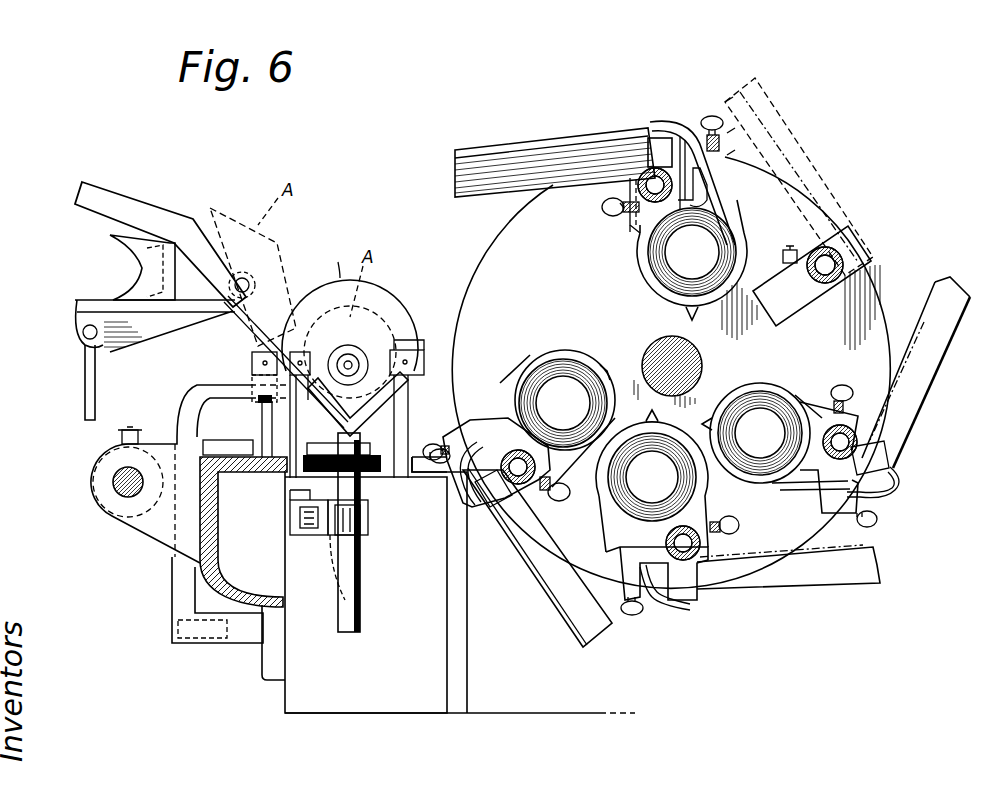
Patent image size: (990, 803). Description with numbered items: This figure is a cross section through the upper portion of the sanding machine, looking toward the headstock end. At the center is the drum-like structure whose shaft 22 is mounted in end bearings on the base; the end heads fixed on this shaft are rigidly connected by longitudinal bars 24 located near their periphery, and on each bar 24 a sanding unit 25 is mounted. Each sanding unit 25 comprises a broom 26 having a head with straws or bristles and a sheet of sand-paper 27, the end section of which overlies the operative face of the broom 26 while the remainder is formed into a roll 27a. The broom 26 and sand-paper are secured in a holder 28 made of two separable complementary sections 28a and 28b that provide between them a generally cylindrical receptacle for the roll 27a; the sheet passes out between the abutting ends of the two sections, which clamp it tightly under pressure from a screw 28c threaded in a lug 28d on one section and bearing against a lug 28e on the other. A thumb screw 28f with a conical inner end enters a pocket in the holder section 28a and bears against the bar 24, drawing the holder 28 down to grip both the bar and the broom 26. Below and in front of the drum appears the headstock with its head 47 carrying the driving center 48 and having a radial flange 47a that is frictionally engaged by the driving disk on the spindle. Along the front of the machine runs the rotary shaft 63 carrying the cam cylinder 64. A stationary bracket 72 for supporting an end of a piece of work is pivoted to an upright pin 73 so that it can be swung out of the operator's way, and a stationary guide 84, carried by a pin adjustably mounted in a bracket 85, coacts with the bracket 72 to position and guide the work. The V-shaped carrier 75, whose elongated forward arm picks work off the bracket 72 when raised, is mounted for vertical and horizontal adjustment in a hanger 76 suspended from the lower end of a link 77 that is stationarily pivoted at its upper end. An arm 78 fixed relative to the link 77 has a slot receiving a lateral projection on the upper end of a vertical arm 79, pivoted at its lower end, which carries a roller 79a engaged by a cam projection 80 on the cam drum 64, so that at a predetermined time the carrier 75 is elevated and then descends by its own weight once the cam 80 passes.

The shaft 22 is at (704, 362).
The longitudinal bar 24 is at (636, 176).
The sanding unit 25 is at (621, 126).
The broom 26 is at (470, 175).
The sheet of sand-paper 27 is at (556, 146).
The roll 27a is at (722, 252).
The holder 28 is at (716, 196).
The holder section 28a is at (633, 232).
The holder section 28b is at (692, 132).
The screw 28c is at (725, 103).
The lug 28d is at (727, 133).
The lug 28e is at (727, 155).
The thumb screw 28f is at (618, 215).
The head 47 is at (408, 322).
The radial flange 47a is at (340, 262).
The driving center 48 is at (351, 361).
The rotary shaft 63 is at (128, 486).
The cam cylinder 64 is at (95, 490).
The stationary bracket 72 is at (208, 313).
The upright pin 73 is at (100, 403).
The V-shaped carrier 75 is at (142, 282).
The hanger 76 is at (363, 488).
The link 77 is at (300, 340).
The arm 78 is at (290, 402).
The vertical arm 79 is at (195, 395).
The roller 79a is at (118, 439).
The cam projection 80 is at (97, 451).
The stationary guide 84 is at (155, 212).
The bracket 85 is at (224, 352).